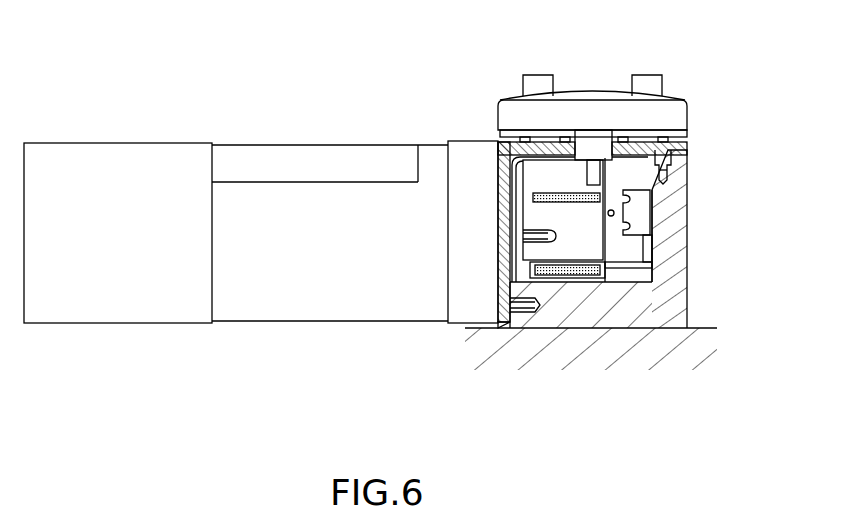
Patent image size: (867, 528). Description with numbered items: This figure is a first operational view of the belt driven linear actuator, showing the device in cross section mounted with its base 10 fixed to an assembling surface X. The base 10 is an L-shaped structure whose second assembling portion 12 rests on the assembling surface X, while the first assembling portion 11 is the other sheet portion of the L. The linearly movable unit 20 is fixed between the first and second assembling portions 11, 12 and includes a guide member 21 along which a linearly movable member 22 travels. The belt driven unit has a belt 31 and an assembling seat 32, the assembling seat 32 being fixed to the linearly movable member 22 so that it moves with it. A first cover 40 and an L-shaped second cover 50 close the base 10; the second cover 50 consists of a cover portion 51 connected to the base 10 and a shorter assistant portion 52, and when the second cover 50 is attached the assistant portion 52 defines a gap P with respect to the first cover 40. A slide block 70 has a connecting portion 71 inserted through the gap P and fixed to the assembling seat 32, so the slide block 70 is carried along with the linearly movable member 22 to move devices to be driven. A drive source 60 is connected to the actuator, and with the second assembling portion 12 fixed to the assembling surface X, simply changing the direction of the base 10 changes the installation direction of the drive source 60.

The base 10 is at (603, 279).
The first assembling portion 11 is at (673, 196).
The second assembling portion 12 is at (600, 316).
The linearly movable unit 20 is at (689, 230).
The guide member 21 is at (642, 210).
The linearly movable member 22 is at (624, 250).
The belt 31 is at (568, 273).
The assembling seat 32 is at (540, 250).
The first cover 40 is at (692, 141).
The second cover 50 is at (587, 189).
The cover portion 51 is at (505, 194).
The assistant portion 52 is at (536, 147).
The drive source 60 is at (97, 141).
The slide block 70 is at (674, 90).
The connecting portion 71 is at (592, 146).
The gap P is at (622, 141).
The assembling surface X is at (707, 329).